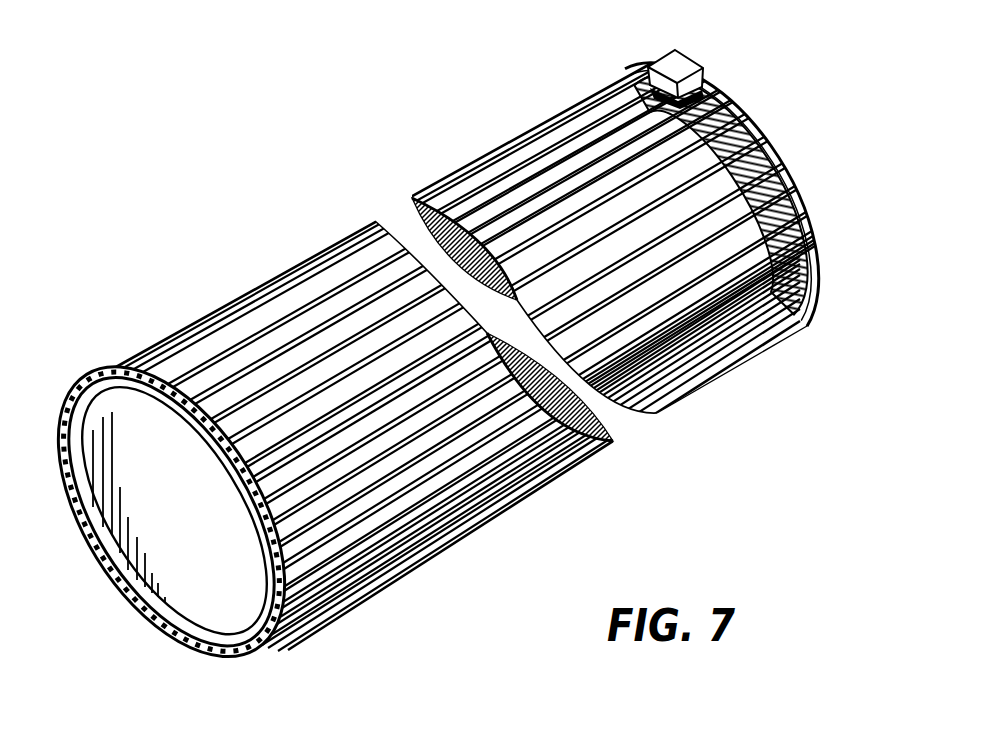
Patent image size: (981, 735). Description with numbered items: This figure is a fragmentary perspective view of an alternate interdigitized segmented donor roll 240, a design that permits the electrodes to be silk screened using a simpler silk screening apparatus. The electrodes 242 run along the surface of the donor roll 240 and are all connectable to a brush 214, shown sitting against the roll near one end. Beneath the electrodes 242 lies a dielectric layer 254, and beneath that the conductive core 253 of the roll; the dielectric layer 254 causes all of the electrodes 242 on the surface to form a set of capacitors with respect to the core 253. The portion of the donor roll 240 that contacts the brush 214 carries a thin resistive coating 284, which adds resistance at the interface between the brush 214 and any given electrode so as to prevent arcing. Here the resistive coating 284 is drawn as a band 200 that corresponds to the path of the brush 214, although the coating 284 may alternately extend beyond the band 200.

The band 200 is at (784, 333).
The brush 214 is at (708, 105).
The donor roll 240 is at (326, 155).
The electrodes 242 is at (505, 190).
The conductive core 253 is at (146, 584).
The dielectric layer 254 is at (238, 631).
The resistive coating 284 is at (67, 402).